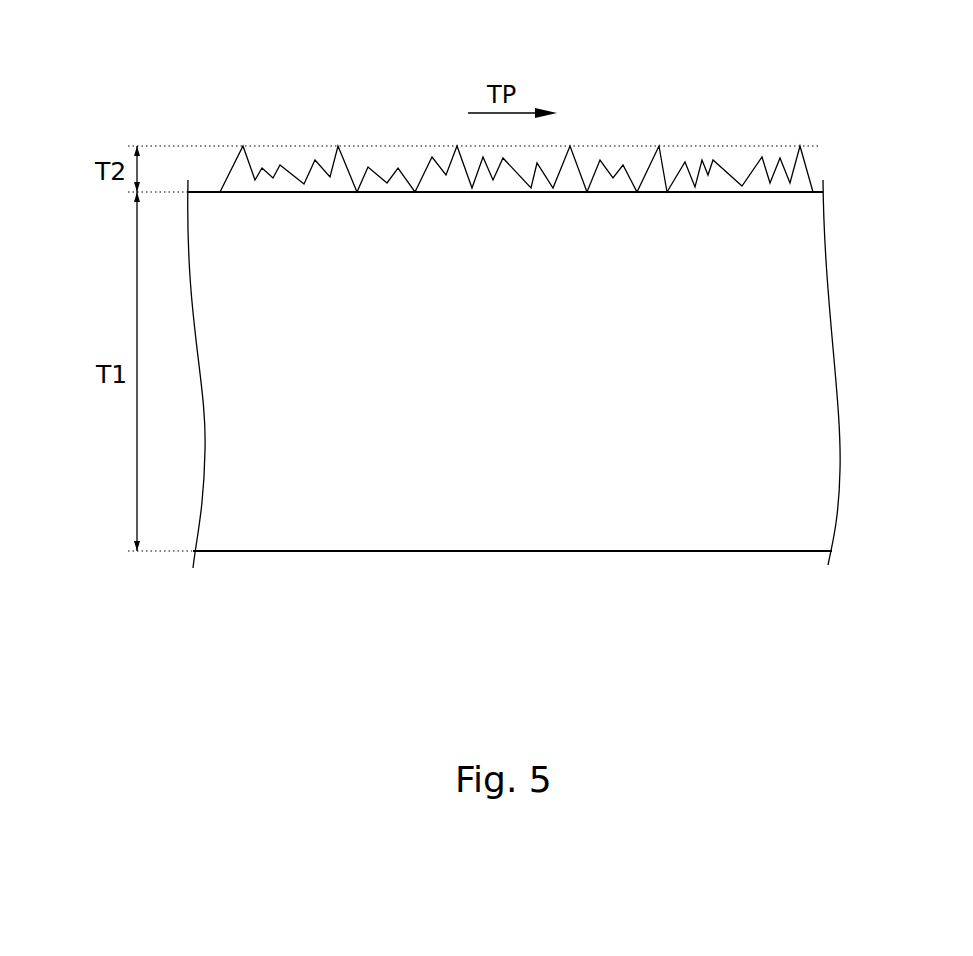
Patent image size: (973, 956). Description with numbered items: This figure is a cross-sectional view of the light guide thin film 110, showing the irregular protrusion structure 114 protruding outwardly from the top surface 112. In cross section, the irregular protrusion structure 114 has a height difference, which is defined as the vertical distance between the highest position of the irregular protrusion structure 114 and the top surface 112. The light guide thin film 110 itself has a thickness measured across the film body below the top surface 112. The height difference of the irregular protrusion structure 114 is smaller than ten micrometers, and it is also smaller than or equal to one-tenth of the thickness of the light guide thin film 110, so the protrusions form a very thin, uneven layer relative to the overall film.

The light guide thin film 110 is at (808, 302).
The top surface 112 is at (760, 193).
The irregular protrusion structure 114 is at (727, 172).